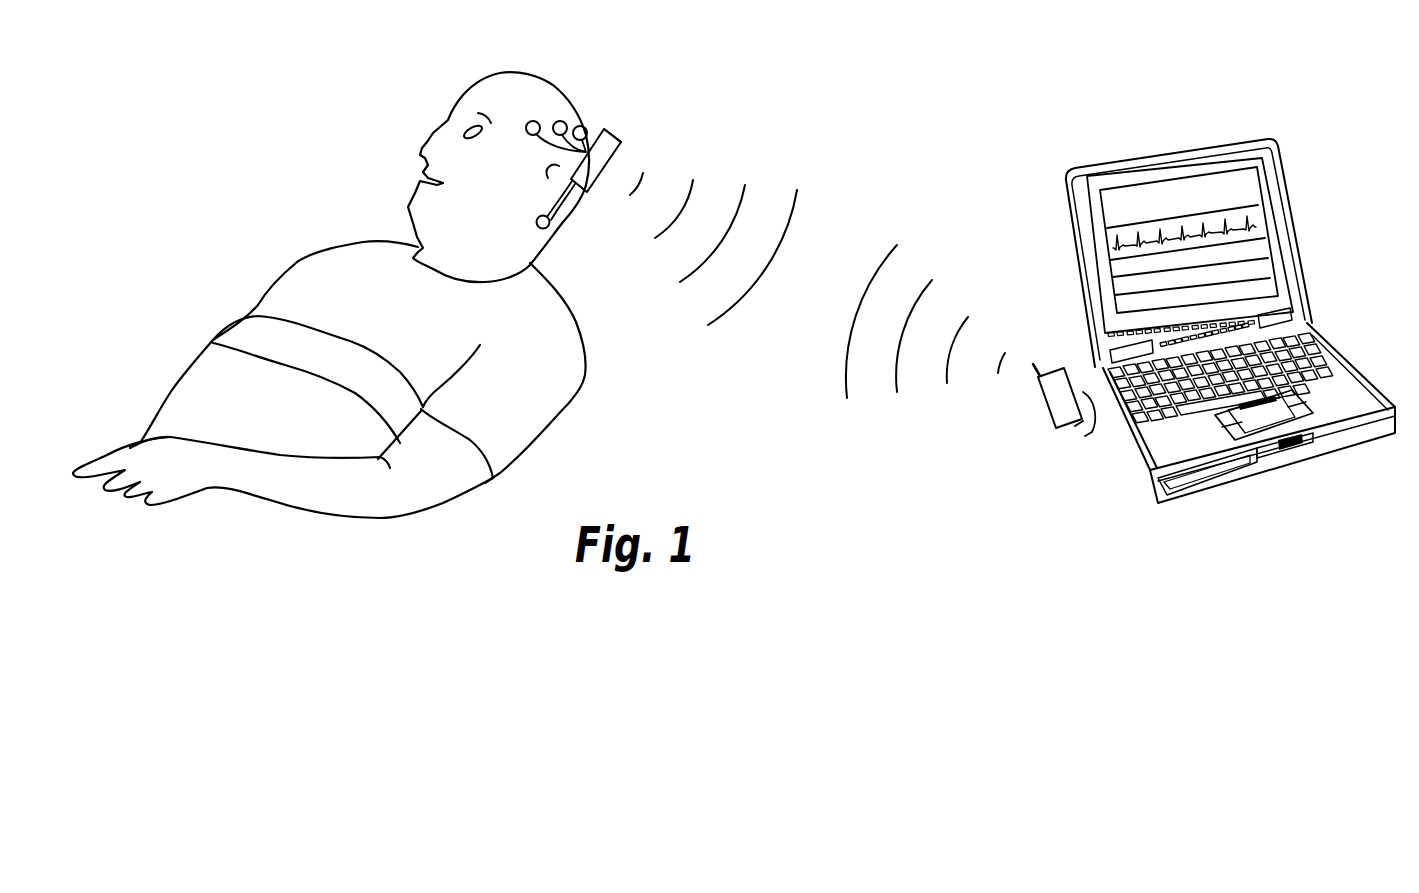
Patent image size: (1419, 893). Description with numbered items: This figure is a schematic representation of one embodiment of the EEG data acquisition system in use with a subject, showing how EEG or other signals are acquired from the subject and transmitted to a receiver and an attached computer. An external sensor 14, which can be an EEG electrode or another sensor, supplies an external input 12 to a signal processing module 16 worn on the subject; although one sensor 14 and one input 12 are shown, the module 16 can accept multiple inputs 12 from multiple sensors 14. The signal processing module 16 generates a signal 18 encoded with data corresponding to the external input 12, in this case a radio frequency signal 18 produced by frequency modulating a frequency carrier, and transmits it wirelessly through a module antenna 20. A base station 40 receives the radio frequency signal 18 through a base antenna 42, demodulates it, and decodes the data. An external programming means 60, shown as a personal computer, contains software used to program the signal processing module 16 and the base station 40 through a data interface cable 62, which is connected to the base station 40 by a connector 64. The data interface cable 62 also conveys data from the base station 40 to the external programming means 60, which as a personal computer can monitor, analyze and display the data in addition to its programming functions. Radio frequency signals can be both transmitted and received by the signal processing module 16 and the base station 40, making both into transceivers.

The external input 12 is at (548, 149).
The external sensor 14 is at (535, 120).
The signal processing module 16 is at (604, 158).
The radio frequency signal 18 is at (863, 287).
The module antenna 20 is at (613, 128).
The base station 40 is at (1055, 402).
The base antenna 42 is at (1040, 372).
The external programming means 60 is at (1288, 235).
The data interface cable 62 is at (1097, 432).
The connector 64 is at (1077, 427).